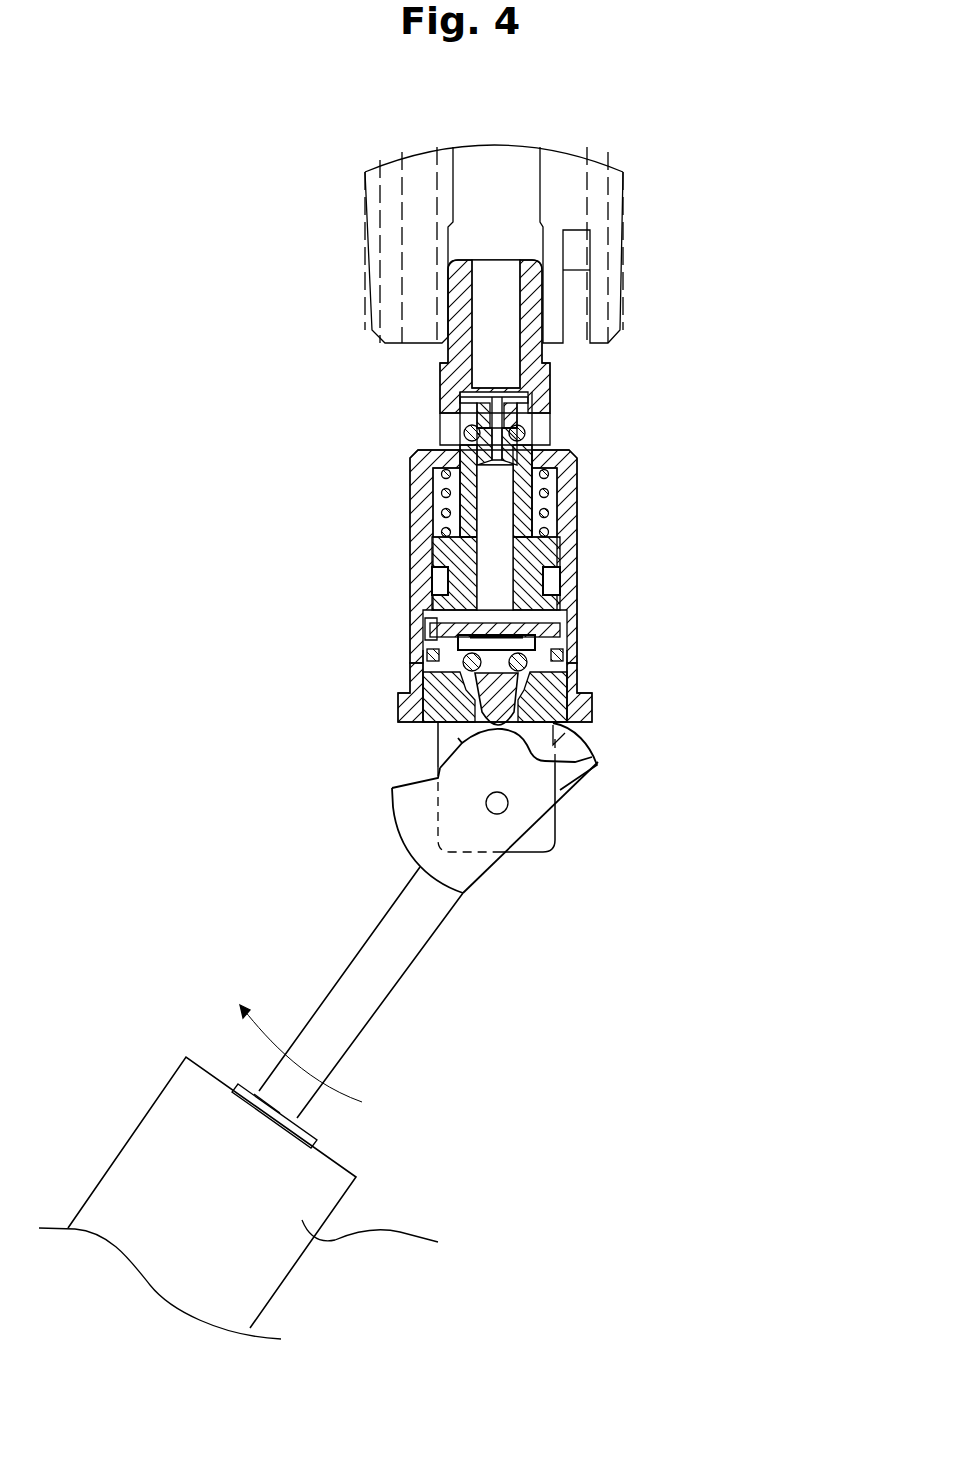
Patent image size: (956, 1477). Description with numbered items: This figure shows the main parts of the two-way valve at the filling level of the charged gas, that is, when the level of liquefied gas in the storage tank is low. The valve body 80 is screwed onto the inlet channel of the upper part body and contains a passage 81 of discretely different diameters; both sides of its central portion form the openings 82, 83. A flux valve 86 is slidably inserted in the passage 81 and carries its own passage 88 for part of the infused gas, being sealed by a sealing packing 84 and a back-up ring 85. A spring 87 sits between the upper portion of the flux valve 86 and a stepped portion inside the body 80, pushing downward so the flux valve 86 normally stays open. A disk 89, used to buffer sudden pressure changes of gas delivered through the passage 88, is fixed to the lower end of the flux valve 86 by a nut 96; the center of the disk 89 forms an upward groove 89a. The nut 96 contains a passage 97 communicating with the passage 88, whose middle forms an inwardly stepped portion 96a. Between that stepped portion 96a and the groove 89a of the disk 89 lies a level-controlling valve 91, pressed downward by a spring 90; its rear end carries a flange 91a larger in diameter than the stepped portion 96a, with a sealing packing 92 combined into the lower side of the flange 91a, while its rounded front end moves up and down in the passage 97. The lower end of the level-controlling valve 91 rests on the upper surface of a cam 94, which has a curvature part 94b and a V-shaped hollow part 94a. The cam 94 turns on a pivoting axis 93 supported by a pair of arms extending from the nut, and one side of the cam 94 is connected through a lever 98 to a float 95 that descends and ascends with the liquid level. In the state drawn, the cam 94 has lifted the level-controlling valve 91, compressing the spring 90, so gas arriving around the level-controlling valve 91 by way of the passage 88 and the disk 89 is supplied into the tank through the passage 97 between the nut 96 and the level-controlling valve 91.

The valve body 80 is at (417, 650).
The passage 81 is at (500, 352).
The opening 82 is at (548, 425).
The opening 83 is at (455, 418).
The sealing packing 84 is at (464, 438).
The back-up ring 85 is at (437, 583).
The flux valve 86 is at (437, 547).
The spring 87 is at (442, 510).
The passage 88 is at (503, 533).
The disk 89 is at (548, 615).
The upward groove 89a is at (440, 590).
The spring 90 is at (535, 642).
The level-controlling valve 91 is at (550, 705).
The flange 91a is at (432, 626).
The sealing packing 92 is at (463, 663).
The pivoting axis 93 is at (497, 803).
The cam 94 is at (568, 780).
The V-shaped hollow part 94a is at (442, 768).
The curvature part 94b is at (600, 762).
The float 95 is at (261, 1198).
The nut 96 is at (393, 790).
The stepped portion 96a is at (455, 740).
The passage 97 is at (460, 678).
The lever 98 is at (376, 998).